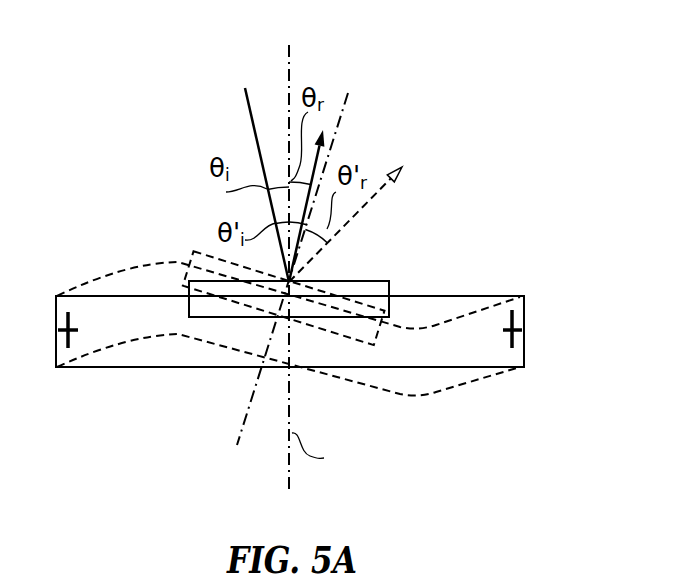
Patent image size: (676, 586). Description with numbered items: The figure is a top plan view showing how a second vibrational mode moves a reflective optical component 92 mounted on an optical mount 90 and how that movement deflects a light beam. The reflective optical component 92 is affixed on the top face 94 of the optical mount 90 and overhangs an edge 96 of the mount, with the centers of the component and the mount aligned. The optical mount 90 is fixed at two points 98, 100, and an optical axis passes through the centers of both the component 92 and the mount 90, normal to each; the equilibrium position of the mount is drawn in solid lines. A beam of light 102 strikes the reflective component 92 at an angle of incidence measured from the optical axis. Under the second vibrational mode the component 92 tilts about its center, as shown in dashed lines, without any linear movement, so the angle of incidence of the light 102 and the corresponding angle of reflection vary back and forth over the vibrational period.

The optical mount 90 is at (102, 86).
The reflective optical component 92 is at (372, 280).
The top face 94 is at (125, 331).
The edge 96 is at (454, 296).
The fixed point 98 is at (63, 325).
The fixed point 100 is at (522, 320).
The beam of light 102 is at (250, 112).